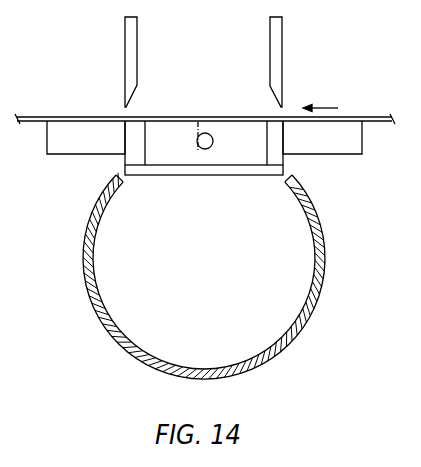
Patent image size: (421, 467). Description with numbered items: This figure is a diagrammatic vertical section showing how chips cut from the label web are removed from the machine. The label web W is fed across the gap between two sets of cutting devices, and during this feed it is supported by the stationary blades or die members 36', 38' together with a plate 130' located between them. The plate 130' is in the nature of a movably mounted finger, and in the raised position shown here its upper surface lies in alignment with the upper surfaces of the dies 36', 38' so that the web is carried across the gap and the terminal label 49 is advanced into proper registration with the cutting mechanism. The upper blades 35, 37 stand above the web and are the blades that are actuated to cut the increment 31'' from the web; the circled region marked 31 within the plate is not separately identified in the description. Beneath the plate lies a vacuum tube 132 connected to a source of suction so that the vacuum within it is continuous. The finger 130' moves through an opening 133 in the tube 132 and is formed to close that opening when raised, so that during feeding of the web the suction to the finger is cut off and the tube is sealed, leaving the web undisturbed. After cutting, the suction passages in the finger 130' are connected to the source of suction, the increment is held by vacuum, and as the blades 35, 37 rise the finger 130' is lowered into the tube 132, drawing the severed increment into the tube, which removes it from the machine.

The label web W is at (382, 117).
The upper blade 35 is at (125, 44).
The upper blade 37 is at (282, 42).
The terminal label 49 is at (73, 113).
The stationary blade 36' is at (86, 148).
The stationary blade 38' is at (324, 148).
The plate 130' is at (204, 131).
The increment 31'' is at (258, 107).
The pivot 31 is at (230, 137).
The opening 133 is at (128, 177).
The vacuum tube 132 is at (324, 230).